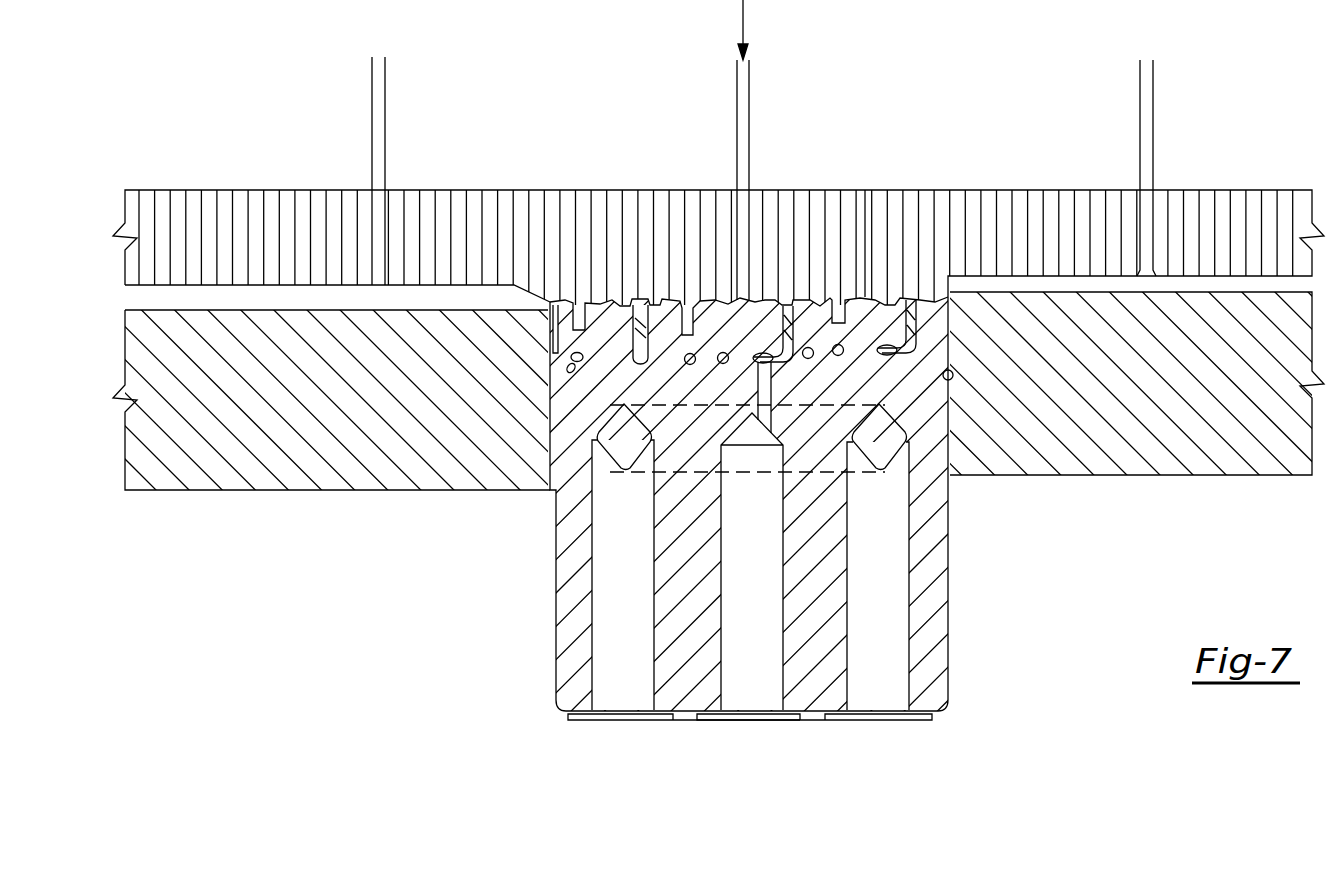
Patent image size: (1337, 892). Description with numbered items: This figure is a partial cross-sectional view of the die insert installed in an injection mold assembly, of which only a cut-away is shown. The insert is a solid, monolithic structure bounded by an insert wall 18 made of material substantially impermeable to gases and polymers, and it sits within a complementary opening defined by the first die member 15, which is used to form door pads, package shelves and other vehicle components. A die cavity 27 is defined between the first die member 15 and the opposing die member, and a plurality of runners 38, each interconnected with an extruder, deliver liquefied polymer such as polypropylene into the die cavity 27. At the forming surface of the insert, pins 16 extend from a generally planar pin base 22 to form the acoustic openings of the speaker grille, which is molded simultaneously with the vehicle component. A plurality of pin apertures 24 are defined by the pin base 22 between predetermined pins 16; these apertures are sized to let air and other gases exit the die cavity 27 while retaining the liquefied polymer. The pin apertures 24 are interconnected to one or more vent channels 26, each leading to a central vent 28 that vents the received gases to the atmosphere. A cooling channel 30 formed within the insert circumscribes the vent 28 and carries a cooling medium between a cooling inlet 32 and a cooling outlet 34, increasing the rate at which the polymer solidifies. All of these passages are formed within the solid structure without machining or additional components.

The first die member 15 is at (1070, 462).
The pins 16 is at (605, 300).
The insert wall 18 is at (948, 557).
The pin base 22 is at (658, 305).
The pin apertures 24 is at (720, 300).
The vent channel 26 is at (772, 392).
The die cavity 27 is at (865, 192).
The central vent 28 is at (764, 596).
The cooling channel 30 is at (636, 596).
The cooling inlet 32 is at (615, 727).
The cooling outlet 34 is at (887, 727).
The runners 38 is at (386, 121).